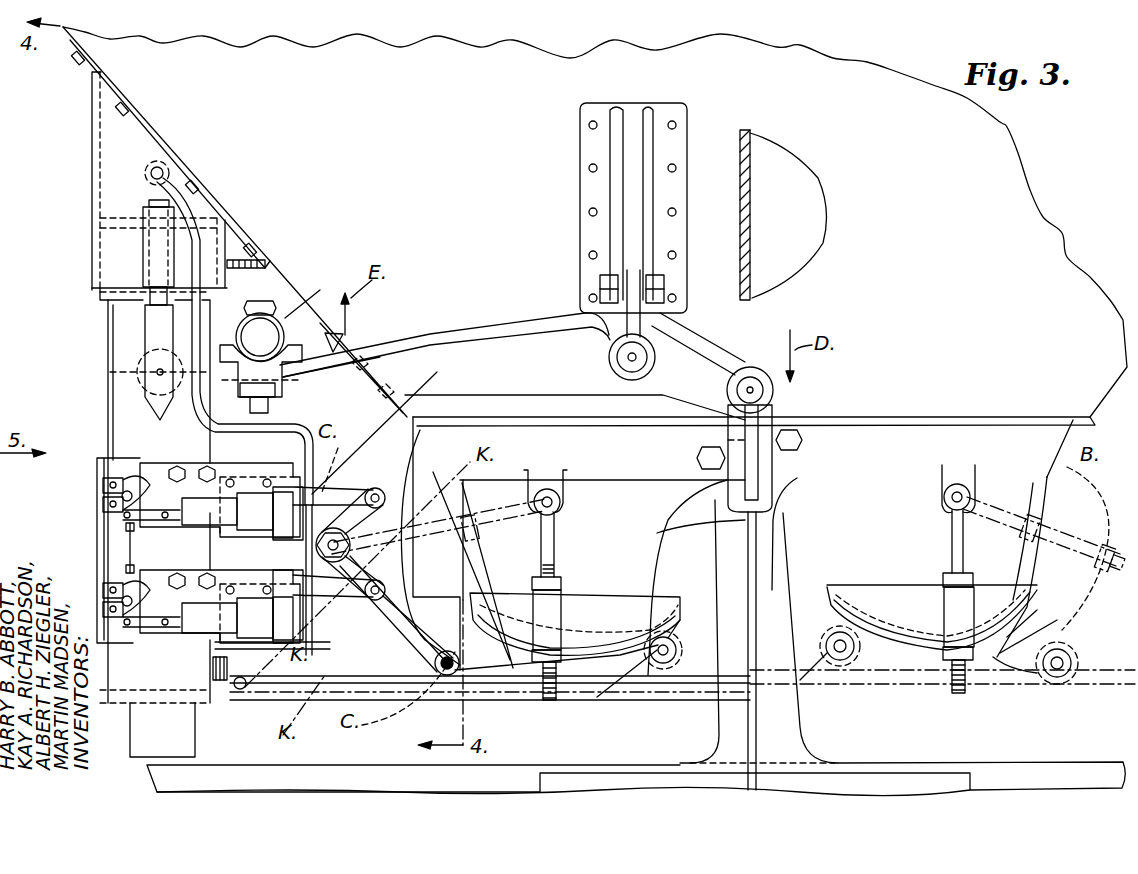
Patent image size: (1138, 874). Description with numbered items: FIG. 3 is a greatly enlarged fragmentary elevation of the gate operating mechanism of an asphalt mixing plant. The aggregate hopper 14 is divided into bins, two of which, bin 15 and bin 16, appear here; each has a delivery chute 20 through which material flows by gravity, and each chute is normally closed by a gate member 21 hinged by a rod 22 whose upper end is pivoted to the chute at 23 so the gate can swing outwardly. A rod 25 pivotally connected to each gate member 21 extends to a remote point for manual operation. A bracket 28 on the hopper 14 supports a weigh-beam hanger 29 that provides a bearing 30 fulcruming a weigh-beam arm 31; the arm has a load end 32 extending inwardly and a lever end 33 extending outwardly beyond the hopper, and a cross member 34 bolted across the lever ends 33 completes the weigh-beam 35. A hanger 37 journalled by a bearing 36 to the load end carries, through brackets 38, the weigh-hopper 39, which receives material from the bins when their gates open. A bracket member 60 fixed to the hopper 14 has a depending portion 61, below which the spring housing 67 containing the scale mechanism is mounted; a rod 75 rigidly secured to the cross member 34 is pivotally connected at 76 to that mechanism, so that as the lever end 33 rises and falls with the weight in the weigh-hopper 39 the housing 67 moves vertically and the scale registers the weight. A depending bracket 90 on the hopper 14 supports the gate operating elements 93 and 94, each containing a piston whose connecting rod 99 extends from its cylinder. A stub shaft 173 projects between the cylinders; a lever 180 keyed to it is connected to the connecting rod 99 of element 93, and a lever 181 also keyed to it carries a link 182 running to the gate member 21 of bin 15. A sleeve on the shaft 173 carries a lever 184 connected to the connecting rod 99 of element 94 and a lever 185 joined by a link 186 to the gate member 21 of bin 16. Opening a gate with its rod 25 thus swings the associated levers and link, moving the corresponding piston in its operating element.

The aggregate hopper 14 is at (316, 137).
The bin 15 is at (804, 223).
The bin 16 is at (734, 205).
The delivery chute 20 is at (634, 558).
The gate member 21 is at (1020, 610).
The rod 22 is at (553, 545).
The pivot 23 is at (560, 498).
The rod 25 is at (162, 702).
The bracket 28 is at (588, 182).
The weigh-beam hanger 29 is at (630, 322).
The bearing 30 is at (652, 358).
The weigh-beam arm 31 is at (475, 337).
The load end 32 is at (730, 352).
The lever end 33 is at (375, 345).
The cross member 34 is at (300, 300).
The weigh-beam 35 is at (428, 326).
The bearing 36 is at (770, 392).
The hanger 37 is at (750, 440).
The bracket 38 is at (770, 583).
The weigh-hopper 39 is at (1005, 768).
The bracket member 60 is at (100, 140).
The depending portion 61 is at (108, 264).
The spring housing 67 is at (118, 406).
The rod 75 is at (215, 367).
The pivotal connection 76 is at (140, 367).
The depending bracket 90 is at (357, 458).
The gate operating element 93 is at (170, 458).
The gate operating element 94 is at (157, 640).
The connecting rod 99 is at (322, 487).
The stub shaft 173 is at (290, 541).
The lever 180 is at (355, 535).
The lever 181 is at (238, 651).
The link 182 is at (330, 676).
The lever 184 is at (729, 536).
The lever 185 is at (405, 630).
The link 186 is at (519, 676).